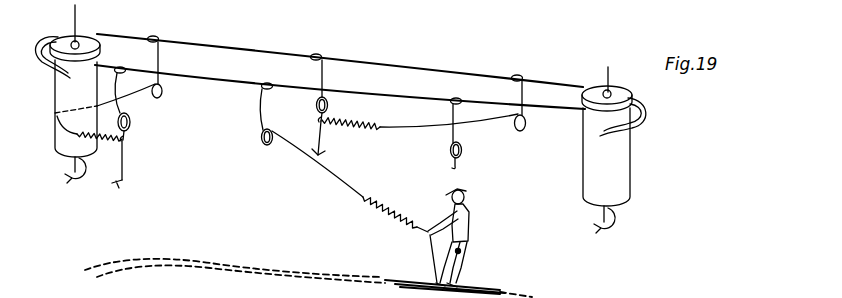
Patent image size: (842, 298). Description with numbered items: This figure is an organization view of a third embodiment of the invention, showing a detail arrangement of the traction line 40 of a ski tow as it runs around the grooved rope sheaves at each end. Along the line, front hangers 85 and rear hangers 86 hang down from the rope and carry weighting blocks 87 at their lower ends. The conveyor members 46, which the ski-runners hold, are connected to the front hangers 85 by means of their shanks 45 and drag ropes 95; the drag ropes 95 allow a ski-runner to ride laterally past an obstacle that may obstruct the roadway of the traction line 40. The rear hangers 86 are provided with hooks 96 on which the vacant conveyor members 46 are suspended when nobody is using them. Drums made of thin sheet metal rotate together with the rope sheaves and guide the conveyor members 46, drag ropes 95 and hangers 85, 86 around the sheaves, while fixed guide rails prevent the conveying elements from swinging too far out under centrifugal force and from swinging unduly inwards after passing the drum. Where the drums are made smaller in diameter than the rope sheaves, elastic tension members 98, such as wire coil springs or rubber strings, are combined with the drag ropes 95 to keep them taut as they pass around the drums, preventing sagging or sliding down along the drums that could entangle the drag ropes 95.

The endless cable 40 is at (199, 74).
The shank 45 is at (123, 166).
The conveyor member 46 is at (472, 262).
The front hanger 85 is at (522, 95).
The rear hanger 86 is at (113, 87).
The weighting block 87 is at (163, 93).
The drag rope 95 is at (57, 135).
The hook 96 is at (127, 138).
The tension member 98 is at (248, 166).